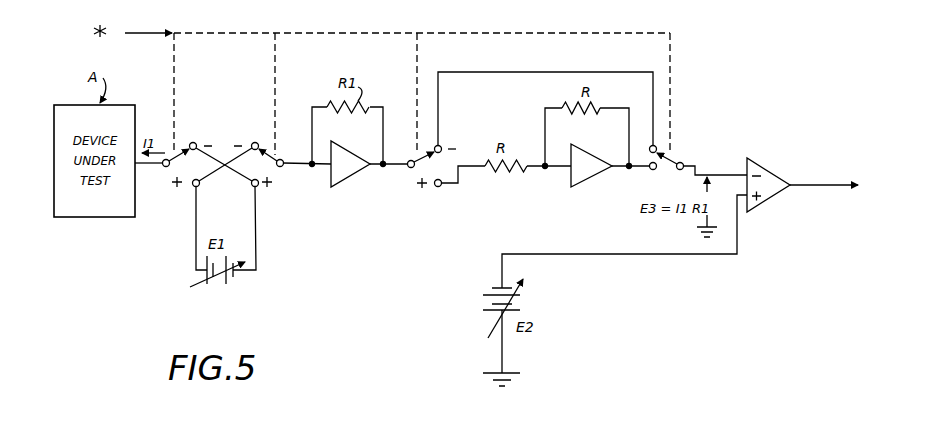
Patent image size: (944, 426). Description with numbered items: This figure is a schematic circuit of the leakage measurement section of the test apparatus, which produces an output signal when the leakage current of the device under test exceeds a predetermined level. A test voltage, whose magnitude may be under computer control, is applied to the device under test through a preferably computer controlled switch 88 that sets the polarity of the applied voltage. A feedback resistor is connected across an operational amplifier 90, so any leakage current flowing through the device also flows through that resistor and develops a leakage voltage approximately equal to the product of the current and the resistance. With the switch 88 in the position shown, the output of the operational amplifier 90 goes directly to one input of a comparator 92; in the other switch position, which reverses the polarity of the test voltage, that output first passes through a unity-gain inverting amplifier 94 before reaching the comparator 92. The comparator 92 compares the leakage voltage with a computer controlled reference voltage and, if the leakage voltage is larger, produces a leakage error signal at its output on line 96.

The computer controlled switch 88 is at (385, 33).
The operational amplifier 90 is at (340, 172).
The comparator 92 is at (768, 177).
The unity-gain inverting amplifier 94 is at (581, 174).
The output line 96 is at (805, 187).